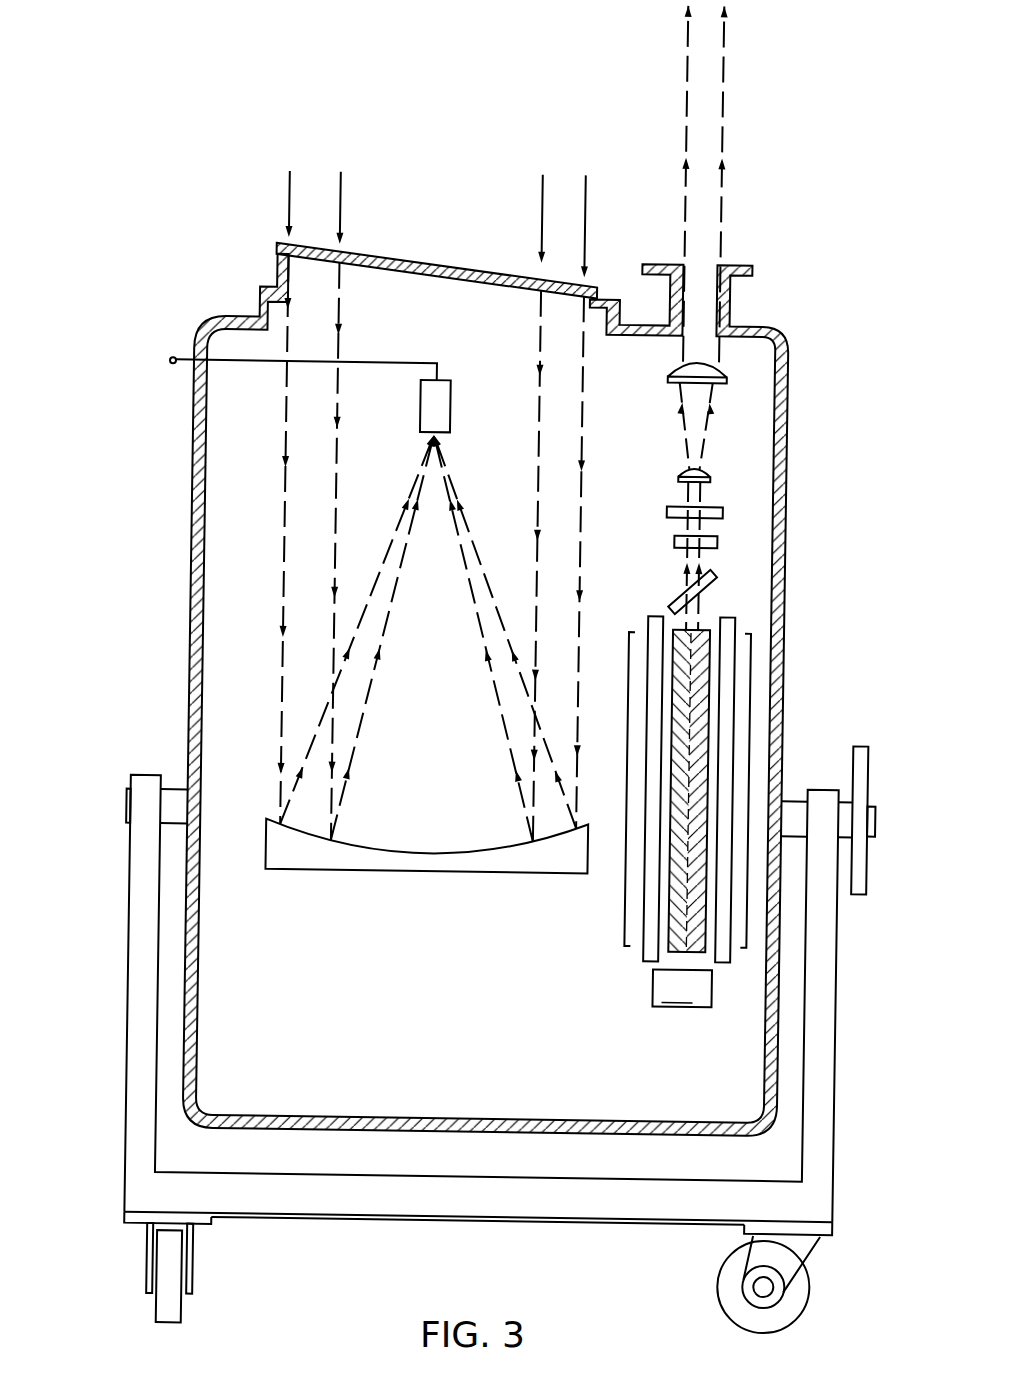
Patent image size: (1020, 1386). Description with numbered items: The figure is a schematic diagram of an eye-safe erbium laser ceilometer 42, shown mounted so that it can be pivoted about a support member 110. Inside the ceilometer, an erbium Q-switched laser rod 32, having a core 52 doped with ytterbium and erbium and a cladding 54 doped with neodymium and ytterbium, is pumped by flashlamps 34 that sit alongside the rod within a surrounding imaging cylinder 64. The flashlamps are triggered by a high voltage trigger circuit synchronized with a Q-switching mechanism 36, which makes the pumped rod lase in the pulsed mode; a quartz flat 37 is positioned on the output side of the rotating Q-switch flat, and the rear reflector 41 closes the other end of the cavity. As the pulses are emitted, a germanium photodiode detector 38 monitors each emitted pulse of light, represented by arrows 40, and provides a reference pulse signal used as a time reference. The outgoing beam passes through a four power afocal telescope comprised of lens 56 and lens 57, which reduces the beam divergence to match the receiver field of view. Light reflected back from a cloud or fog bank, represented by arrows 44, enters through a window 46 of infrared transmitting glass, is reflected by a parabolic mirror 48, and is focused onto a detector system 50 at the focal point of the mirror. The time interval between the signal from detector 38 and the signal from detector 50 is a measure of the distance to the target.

The erbium Q-switched laser rod 32 is at (667, 821).
The flashlamps 34 is at (647, 708).
The Q-switching mechanism 36 is at (712, 580).
The quartz flat 37 is at (716, 540).
The germanium photodiode detector 38 is at (716, 505).
The emitted pulse of light 40 is at (714, 230).
The rear reflector 41 is at (646, 977).
The ceilometer 42 is at (184, 582).
The returning pulses of light 44 is at (335, 208).
The window 46 is at (425, 266).
The parabolic mirror 48 is at (421, 873).
The detector system 50 is at (416, 401).
The core 52 is at (688, 905).
The cladding 54 is at (680, 879).
The lens 56 is at (716, 366).
The lens 57 is at (705, 472).
The imaging cylinder 64 is at (626, 946).
The support member 110 is at (791, 810).